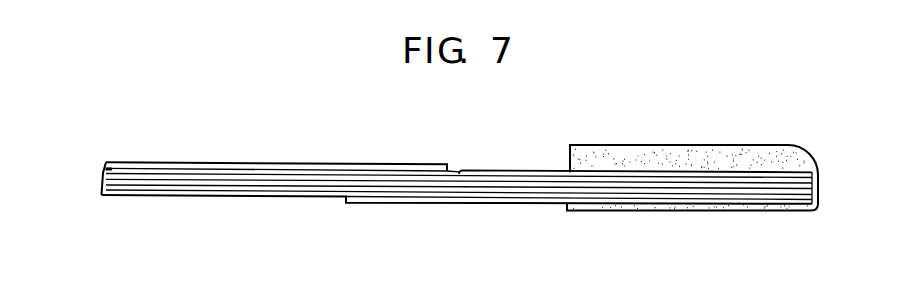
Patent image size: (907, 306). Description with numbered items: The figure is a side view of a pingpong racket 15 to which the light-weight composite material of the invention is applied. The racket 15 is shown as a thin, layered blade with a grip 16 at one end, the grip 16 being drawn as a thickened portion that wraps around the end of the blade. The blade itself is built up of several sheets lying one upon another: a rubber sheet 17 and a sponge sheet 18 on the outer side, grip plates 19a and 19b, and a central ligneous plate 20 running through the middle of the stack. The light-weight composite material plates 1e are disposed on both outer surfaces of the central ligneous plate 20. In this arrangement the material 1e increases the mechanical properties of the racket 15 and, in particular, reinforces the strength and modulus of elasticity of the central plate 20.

The pingpong racket 15 is at (692, 146).
The grip 16 is at (746, 145).
The rubber sheet 17 is at (212, 163).
The sponge sheet 18 is at (108, 172).
The grip plate 19a is at (505, 170).
The grip plate 19b is at (483, 203).
The central ligneous plate 20 is at (243, 187).
The light-weight composite material plate 1e is at (819, 193).